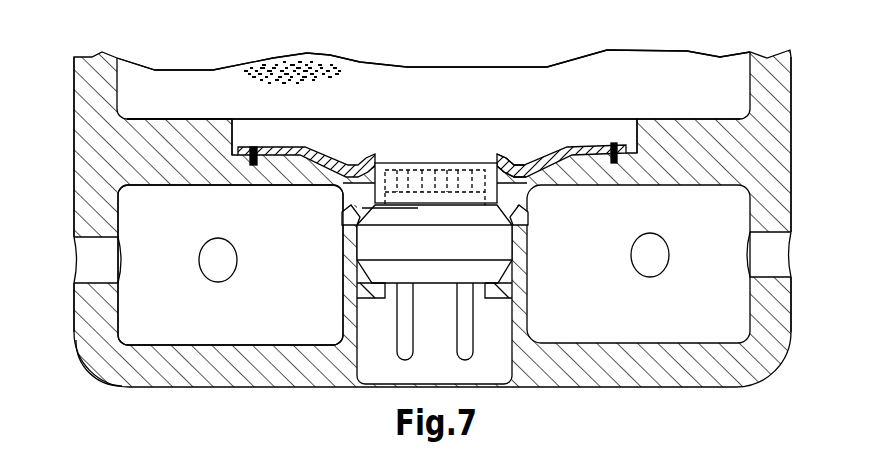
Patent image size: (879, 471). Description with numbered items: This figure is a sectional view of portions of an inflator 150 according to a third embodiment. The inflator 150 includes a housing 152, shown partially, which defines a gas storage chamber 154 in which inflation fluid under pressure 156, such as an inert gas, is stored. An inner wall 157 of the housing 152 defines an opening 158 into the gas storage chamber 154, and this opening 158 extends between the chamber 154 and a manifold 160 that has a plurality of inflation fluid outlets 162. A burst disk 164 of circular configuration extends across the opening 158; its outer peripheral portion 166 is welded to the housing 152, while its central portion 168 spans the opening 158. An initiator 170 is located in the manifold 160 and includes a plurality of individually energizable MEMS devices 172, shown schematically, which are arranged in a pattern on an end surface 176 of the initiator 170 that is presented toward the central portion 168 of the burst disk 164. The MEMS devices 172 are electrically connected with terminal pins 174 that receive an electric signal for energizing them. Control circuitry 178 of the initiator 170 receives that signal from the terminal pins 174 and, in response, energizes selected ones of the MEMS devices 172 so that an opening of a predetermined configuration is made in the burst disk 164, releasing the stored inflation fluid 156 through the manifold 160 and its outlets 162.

The inflator 150 is at (801, 340).
The housing 152 is at (797, 139).
The gas storage chamber 154 is at (720, 73).
The inflation fluid under pressure 156 is at (281, 65).
The inner wall 157 is at (166, 146).
The opening 158 is at (318, 130).
The manifold 160 is at (167, 327).
The inflation fluid outlets 162 is at (93, 262).
The burst disk 164 is at (338, 150).
The outer peripheral portion 166 is at (620, 150).
The central portion 168 is at (505, 160).
The initiator 170 is at (514, 238).
The MEMS devices 172 is at (471, 176).
The terminal pins 174 is at (455, 345).
The end surface 176 is at (411, 162).
The control circuitry 178 is at (345, 213).